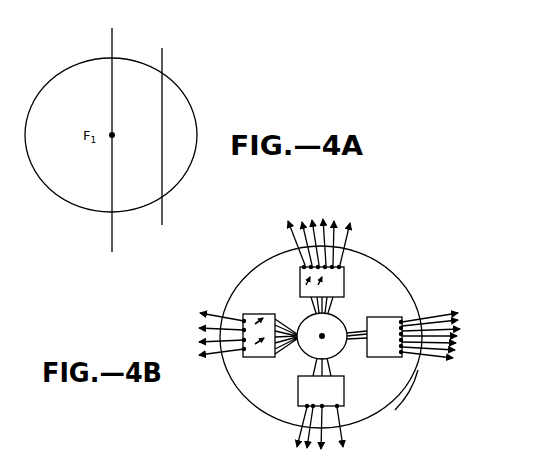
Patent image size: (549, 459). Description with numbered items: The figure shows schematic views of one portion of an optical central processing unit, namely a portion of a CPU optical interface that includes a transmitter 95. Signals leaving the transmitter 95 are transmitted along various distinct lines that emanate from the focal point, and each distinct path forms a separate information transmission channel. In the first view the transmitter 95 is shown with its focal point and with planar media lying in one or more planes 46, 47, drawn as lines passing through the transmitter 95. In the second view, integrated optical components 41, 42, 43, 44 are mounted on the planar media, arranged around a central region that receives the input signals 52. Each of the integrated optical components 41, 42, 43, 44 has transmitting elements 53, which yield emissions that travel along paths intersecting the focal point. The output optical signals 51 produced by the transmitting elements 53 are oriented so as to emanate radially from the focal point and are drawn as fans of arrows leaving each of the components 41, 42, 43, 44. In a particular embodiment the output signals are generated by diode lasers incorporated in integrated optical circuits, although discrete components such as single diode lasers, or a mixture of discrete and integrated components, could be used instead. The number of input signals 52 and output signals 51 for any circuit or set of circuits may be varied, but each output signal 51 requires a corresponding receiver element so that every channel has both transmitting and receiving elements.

In FIG. 4B, the integrated optical component 41 is at (345, 278).
In FIG. 4B, the integrated optical component 42 is at (380, 357).
In FIG. 4B, the integrated optical component 43 is at (339, 391).
In FIG. 4B, the integrated optical component 44 is at (262, 357).
In FIG. 4A, the plane 46 is at (166, 56).
In FIG. 4B, the plane 46 is at (410, 383).
In FIG. 4A, the plane 47 is at (113, 38).
In FIG. 4B, the output optical signals 51 is at (336, 205).
In FIG. 4B, the input signals 52 is at (355, 343).
In FIG. 4B, the transmitting elements 53 is at (322, 283).
In FIG. 4A, the transmitter 95 is at (181, 88).
In FIG. 4B, the transmitter 95 is at (383, 262).